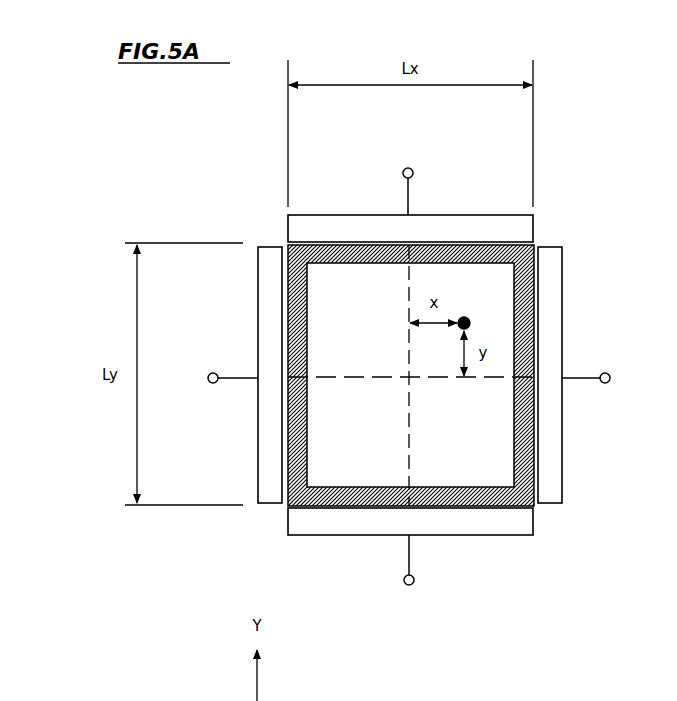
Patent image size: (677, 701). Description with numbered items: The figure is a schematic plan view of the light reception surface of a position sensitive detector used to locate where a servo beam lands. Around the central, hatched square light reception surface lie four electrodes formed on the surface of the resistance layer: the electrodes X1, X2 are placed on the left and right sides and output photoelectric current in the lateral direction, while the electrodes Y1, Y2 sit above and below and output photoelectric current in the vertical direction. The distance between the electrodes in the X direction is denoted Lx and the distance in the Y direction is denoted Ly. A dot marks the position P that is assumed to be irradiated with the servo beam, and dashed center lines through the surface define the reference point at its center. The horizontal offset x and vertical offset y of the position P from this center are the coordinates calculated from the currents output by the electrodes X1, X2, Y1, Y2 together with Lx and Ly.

The electrode X1 is at (219, 379).
The electrode X2 is at (603, 379).
The electrode Y1 is at (413, 574).
The electrode Y2 is at (412, 177).
The position P is at (471, 310).